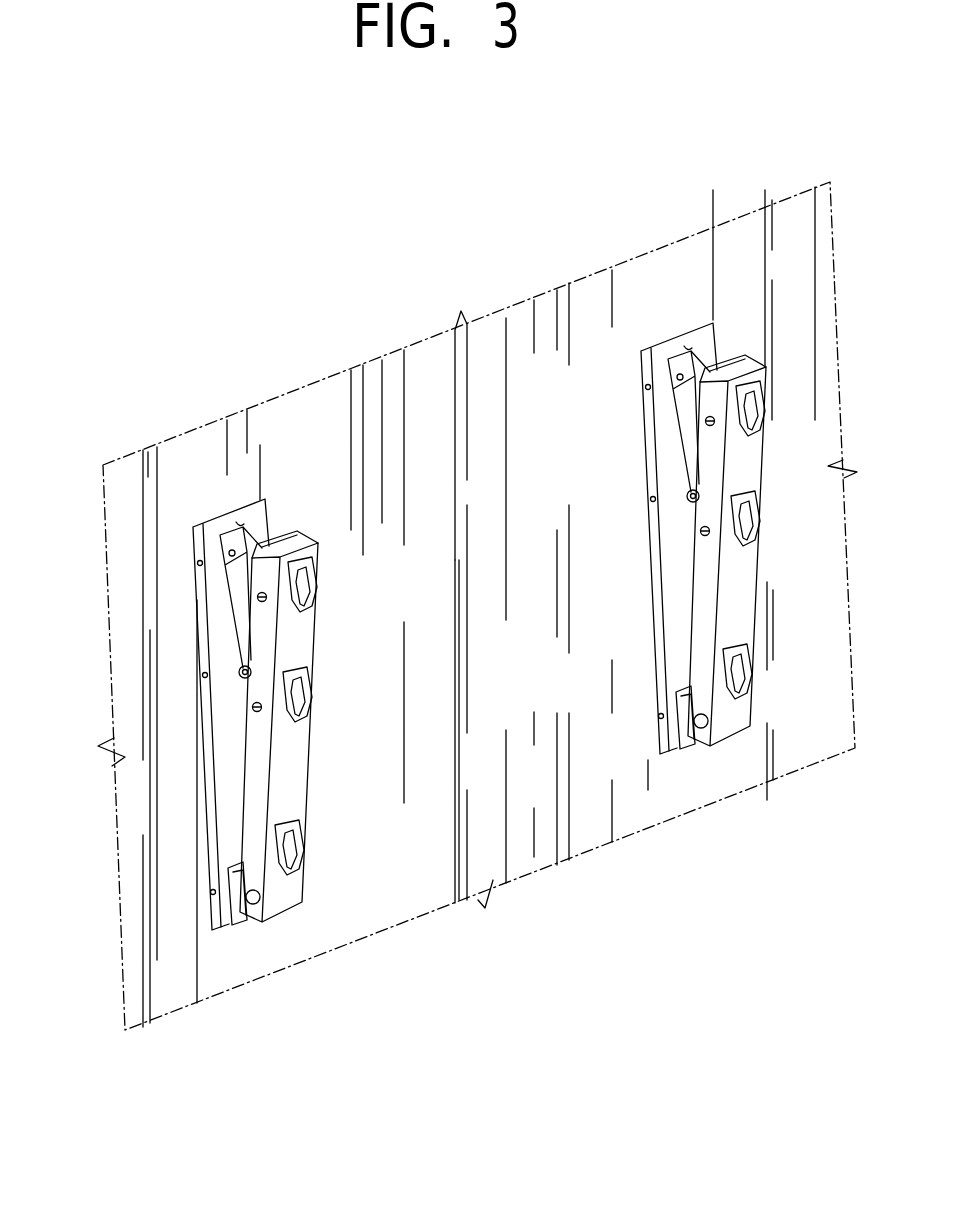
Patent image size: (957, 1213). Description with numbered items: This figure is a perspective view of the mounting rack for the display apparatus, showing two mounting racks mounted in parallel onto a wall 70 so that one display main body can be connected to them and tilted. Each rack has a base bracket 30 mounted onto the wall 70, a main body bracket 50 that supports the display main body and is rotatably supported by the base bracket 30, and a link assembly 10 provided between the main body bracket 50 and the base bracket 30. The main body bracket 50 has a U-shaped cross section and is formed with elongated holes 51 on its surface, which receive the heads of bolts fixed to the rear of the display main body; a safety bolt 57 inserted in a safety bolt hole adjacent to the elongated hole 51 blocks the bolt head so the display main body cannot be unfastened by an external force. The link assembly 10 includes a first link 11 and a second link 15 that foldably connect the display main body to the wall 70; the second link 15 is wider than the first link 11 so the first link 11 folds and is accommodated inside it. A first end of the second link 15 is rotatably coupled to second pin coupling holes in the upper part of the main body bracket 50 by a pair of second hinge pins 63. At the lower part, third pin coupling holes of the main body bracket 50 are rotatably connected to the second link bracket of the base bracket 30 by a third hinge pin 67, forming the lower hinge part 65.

The link assembly 10 is at (471, 610).
The first link 11 is at (683, 418).
The second link 15 is at (703, 437).
The base bracket 30 is at (687, 583).
The main body bracket 50 is at (723, 733).
The elongated holes 51 is at (850, 778).
The safety bolt 57 is at (705, 528).
The second hinge pins 63 is at (745, 358).
The lower hinge part 65 is at (678, 768).
The third hinge pin 67 is at (697, 722).
The wall 70 is at (478, 340).